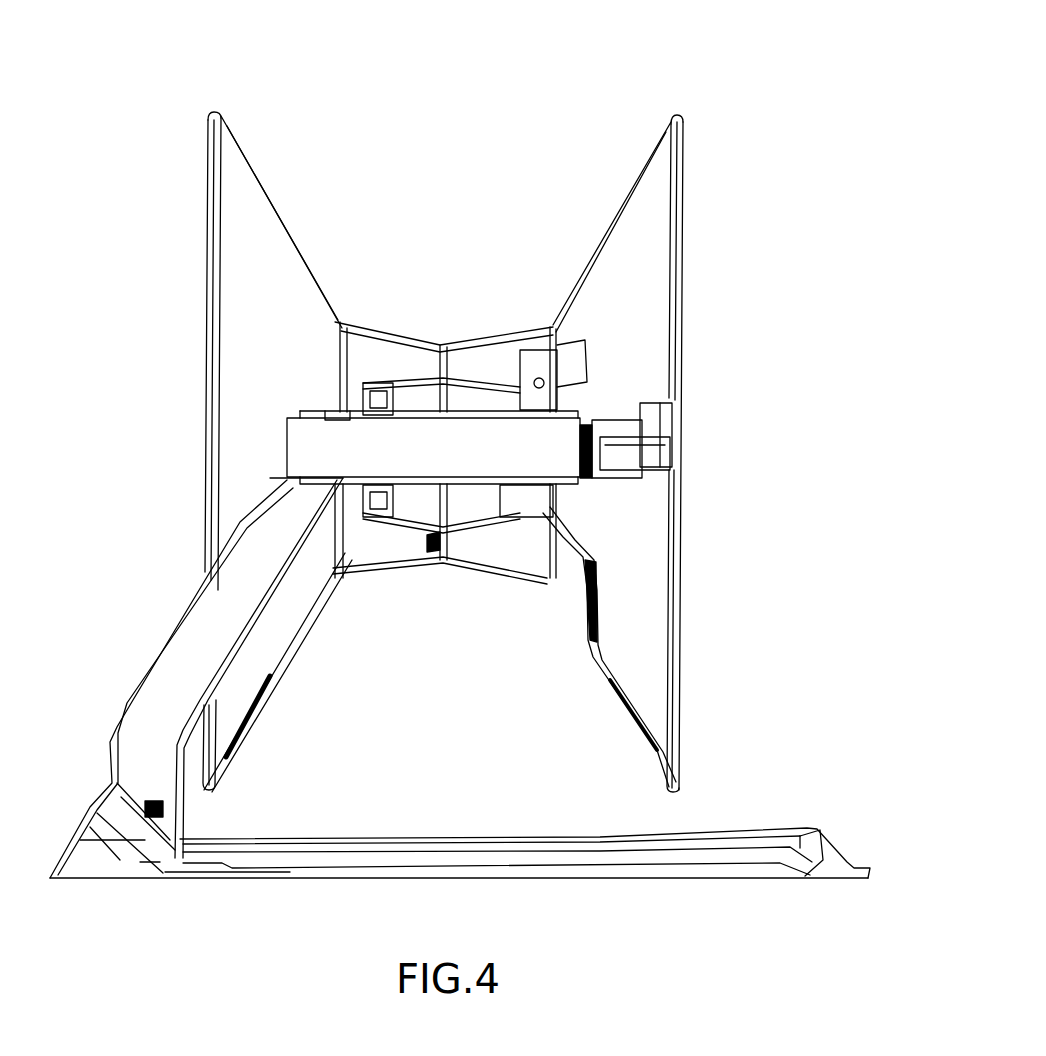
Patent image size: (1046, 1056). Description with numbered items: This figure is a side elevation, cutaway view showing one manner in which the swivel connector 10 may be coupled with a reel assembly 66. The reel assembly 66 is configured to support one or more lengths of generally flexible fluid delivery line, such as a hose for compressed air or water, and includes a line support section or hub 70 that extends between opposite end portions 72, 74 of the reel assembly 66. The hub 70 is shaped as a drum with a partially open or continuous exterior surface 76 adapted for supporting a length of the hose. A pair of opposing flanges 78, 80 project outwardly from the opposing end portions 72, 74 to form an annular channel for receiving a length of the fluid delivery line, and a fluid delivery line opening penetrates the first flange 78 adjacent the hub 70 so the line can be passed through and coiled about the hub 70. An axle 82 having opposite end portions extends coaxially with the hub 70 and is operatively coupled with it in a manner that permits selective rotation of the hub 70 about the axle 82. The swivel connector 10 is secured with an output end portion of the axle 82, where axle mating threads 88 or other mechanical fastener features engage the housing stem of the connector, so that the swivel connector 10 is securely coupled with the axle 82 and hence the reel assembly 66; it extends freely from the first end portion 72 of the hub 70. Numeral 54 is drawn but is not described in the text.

The swivel connector 10 is at (688, 437).
The mounting plate 54 is at (570, 425).
The reel assembly 66 is at (535, 400).
The hub 70 is at (417, 560).
The first end portion 72 is at (538, 302).
The second end portion 74 is at (339, 320).
The exterior surface 76 is at (369, 322).
The first flange 78 is at (652, 142).
The second flange 80 is at (268, 188).
The axle 82 is at (407, 417).
The axle mating threads 88 is at (590, 482).